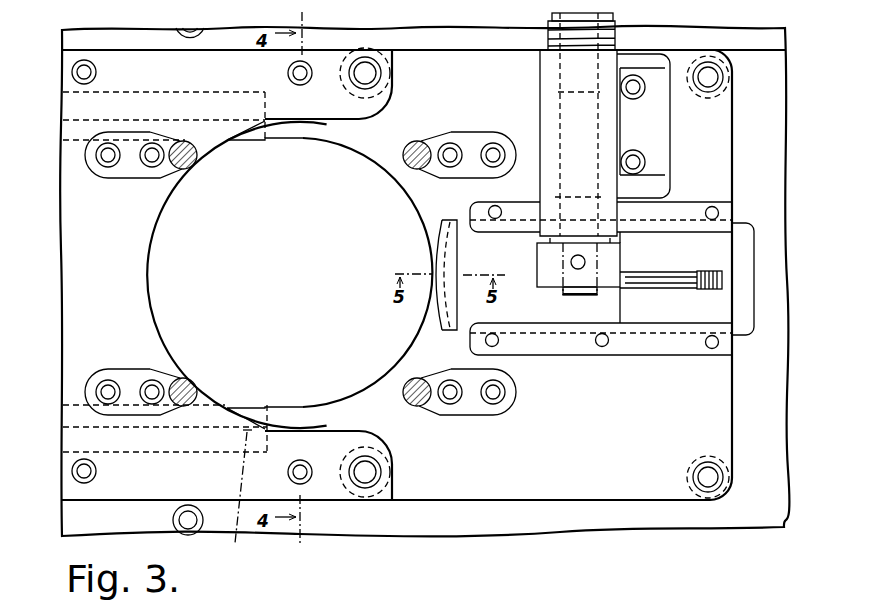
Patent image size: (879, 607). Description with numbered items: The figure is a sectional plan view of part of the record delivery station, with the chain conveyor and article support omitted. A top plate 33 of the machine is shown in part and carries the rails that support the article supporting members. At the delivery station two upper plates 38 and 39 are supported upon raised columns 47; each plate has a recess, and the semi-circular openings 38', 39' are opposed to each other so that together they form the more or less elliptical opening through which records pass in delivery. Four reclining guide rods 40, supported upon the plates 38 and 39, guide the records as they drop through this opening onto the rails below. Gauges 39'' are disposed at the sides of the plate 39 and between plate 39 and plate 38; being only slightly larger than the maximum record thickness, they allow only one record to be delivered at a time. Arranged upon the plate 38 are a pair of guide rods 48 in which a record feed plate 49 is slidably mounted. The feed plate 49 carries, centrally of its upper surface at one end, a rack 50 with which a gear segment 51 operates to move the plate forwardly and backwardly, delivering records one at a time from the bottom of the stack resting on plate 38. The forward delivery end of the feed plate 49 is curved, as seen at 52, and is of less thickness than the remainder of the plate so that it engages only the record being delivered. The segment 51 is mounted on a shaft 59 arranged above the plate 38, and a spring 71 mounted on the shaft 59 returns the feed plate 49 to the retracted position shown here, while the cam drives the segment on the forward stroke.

The top plate 33 is at (547, 512).
The upper plate 38 is at (423, 303).
The semi-circular opening 38' is at (329, 228).
The upper plate 39 is at (148, 162).
The semi-circular opening 39' is at (236, 275).
The gauges 39'' is at (238, 499).
The reclining guide rods 40 is at (185, 168).
The raised columns 47 is at (722, 75).
The guide rods 48 is at (673, 215).
The feed plate 49 is at (621, 312).
The rack 50 is at (717, 268).
The segment 51 is at (677, 282).
The curved delivery end 52 is at (440, 243).
The shaft 59 is at (577, 290).
The spring 71 is at (545, 38).